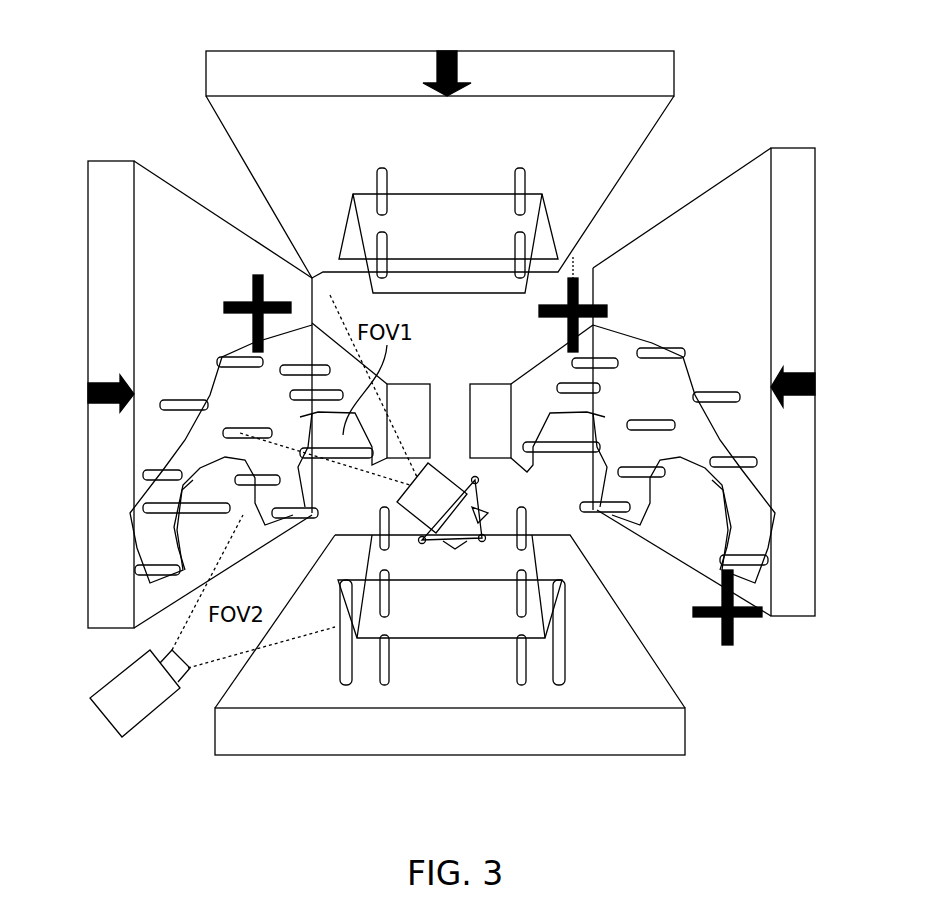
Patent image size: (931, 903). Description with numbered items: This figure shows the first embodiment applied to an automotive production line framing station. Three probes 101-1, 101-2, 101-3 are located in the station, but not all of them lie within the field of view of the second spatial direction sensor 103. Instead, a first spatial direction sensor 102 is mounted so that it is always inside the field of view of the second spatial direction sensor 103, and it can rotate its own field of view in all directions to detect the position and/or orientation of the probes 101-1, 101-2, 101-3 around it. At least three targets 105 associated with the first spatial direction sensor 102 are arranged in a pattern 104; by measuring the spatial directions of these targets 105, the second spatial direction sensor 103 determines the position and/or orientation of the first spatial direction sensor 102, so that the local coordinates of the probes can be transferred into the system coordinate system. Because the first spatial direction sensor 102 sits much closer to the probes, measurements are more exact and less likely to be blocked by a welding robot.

The first probe 101-1 is at (253, 293).
The probe 101-2 is at (568, 257).
The probe 101-3 is at (727, 645).
The first spatial direction sensor 102 is at (421, 510).
The second spatial direction sensor 103 is at (143, 700).
The pattern 104 is at (480, 508).
The targets 105 is at (473, 480).